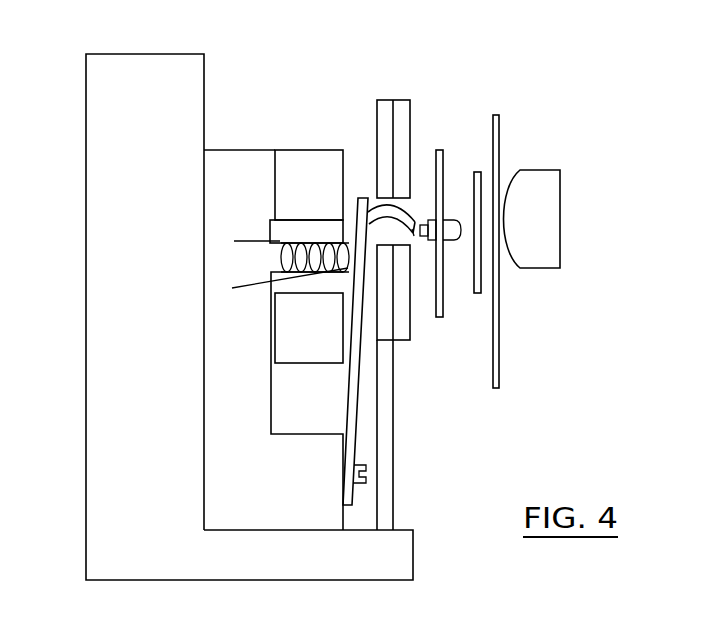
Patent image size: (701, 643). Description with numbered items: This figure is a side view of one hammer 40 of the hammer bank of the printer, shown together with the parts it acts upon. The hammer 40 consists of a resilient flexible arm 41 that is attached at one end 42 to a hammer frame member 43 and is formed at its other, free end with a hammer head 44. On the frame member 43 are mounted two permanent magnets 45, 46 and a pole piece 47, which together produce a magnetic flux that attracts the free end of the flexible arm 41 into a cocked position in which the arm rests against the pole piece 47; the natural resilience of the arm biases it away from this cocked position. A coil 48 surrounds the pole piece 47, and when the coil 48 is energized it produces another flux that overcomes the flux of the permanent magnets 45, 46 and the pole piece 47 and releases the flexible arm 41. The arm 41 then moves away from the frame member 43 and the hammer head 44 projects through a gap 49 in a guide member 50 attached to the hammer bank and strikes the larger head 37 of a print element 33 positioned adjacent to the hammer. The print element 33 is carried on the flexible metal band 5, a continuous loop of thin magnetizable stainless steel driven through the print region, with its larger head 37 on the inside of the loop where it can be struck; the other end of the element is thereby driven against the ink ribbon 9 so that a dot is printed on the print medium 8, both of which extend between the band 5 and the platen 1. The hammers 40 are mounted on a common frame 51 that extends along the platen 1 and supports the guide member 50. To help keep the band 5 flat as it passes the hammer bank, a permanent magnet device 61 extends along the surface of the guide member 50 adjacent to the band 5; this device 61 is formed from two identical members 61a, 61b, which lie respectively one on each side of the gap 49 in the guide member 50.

The platen 1 is at (548, 172).
The flexible metal band 5 is at (441, 152).
The print medium 8 is at (499, 116).
The ink ribbon 9 is at (477, 172).
The print element 33 is at (447, 218).
The larger head 37 is at (415, 236).
The hammer 40 is at (240, 142).
The resilient flexible arm 41 is at (360, 369).
The attached end of flexible arm 42 is at (352, 461).
The hammer frame member 43 is at (233, 331).
The hammer head 44 is at (416, 218).
The permanent magnet 45 is at (289, 158).
The permanent magnet 46 is at (308, 357).
The pole piece 47 is at (281, 258).
The coil 48 is at (283, 242).
The gap 49 is at (378, 206).
The guide member 50 is at (376, 101).
The common frame 51 is at (105, 263).
The permanent magnet device 61 is at (403, 90).
The permanent magnet member 61a is at (412, 100).
The permanent magnet member 61b is at (410, 333).